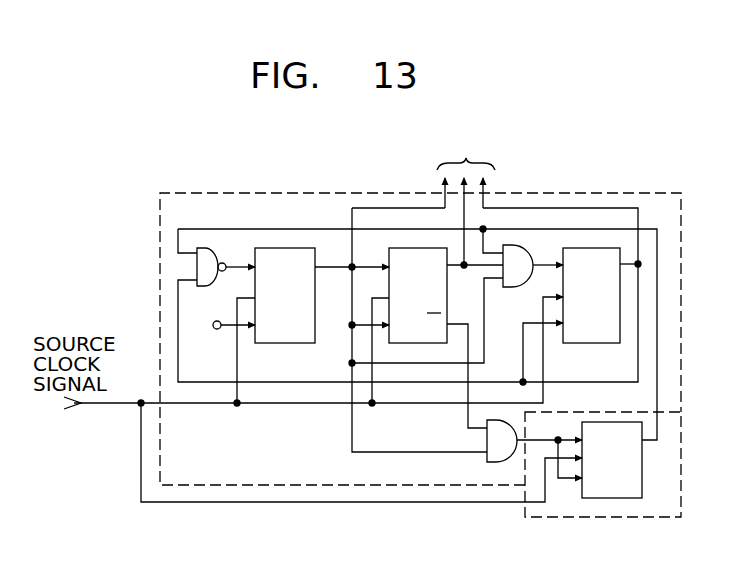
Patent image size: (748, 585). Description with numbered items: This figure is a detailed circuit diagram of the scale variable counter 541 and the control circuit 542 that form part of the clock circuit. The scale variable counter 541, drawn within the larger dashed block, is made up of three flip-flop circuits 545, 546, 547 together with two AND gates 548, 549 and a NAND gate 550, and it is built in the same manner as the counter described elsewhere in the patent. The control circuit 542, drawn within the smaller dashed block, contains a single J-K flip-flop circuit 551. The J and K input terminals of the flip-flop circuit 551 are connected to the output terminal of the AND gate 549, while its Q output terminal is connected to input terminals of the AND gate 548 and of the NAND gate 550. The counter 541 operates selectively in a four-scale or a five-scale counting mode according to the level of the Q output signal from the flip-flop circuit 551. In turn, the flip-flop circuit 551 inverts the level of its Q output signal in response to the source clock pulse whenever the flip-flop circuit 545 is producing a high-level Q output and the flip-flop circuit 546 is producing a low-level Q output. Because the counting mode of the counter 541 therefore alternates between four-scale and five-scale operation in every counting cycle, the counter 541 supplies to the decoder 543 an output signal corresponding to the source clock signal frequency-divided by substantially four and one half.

The scale variable counter 541 is at (258, 486).
The control circuit 542 is at (545, 518).
The decoder 543 is at (478, 196).
The flip-flop circuit 545 is at (288, 343).
The flip-flop circuit 546 is at (405, 248).
The flip-flop circuit 547 is at (578, 343).
The AND gate 548 is at (516, 245).
The AND gate 549 is at (493, 458).
The NAND gate 550 is at (200, 248).
The J-K flip-flop circuit 551 is at (605, 498).